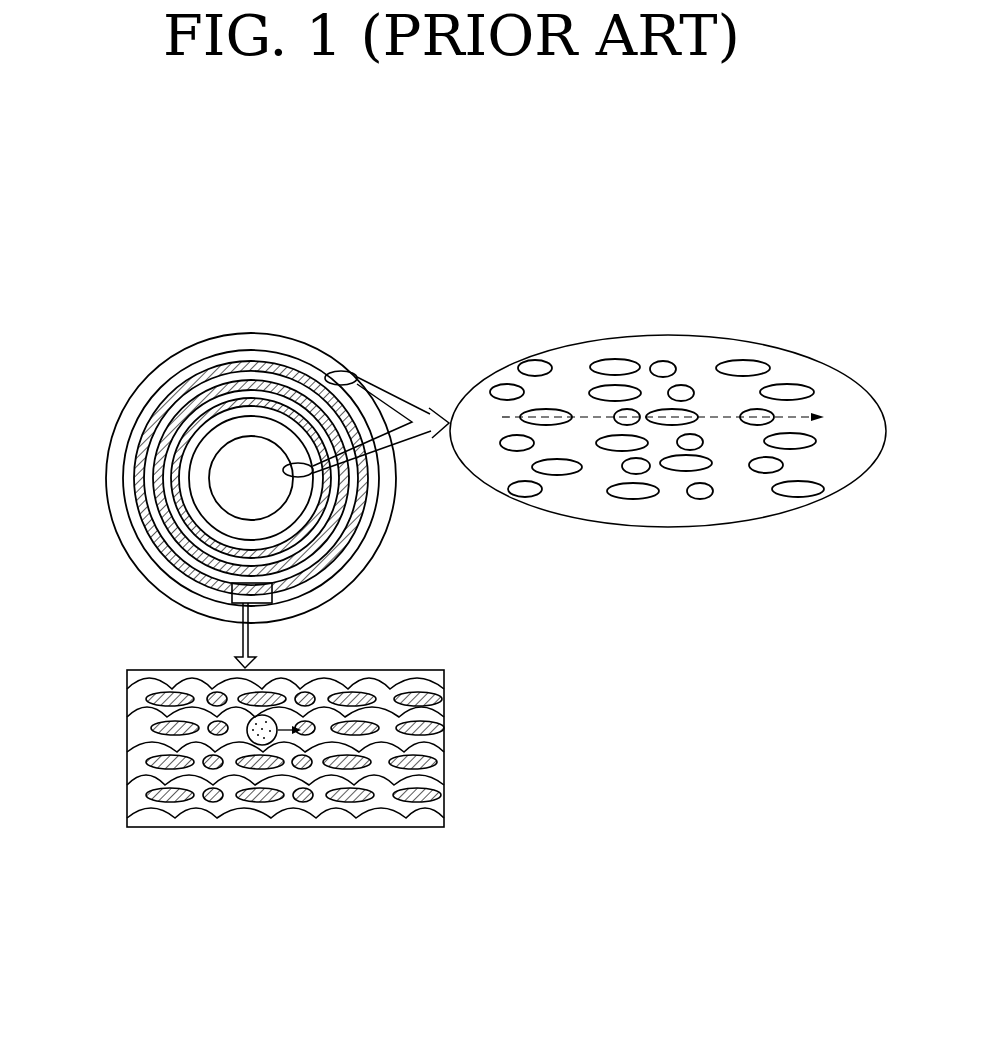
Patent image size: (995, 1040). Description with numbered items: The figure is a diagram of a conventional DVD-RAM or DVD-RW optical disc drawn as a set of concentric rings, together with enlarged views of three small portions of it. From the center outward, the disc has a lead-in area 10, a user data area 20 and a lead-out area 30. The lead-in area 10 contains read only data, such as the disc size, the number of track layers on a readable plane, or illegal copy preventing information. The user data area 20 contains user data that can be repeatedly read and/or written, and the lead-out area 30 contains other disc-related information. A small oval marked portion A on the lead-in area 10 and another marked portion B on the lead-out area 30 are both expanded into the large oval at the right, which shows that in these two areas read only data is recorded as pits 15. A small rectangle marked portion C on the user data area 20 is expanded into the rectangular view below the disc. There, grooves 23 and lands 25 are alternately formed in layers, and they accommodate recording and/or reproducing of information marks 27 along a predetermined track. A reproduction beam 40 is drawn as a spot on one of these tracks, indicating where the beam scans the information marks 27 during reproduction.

The lead-in area 10 is at (254, 423).
The pits 15 is at (700, 499).
The user data area 20 is at (124, 469).
The grooves 23 is at (128, 701).
The lands 25 is at (128, 733).
The information marks 27 is at (405, 803).
The lead-out area 30 is at (212, 350).
The reproduction beam 40 is at (267, 716).
The portion A is at (283, 470).
The portion B is at (345, 371).
The portion C is at (235, 603).